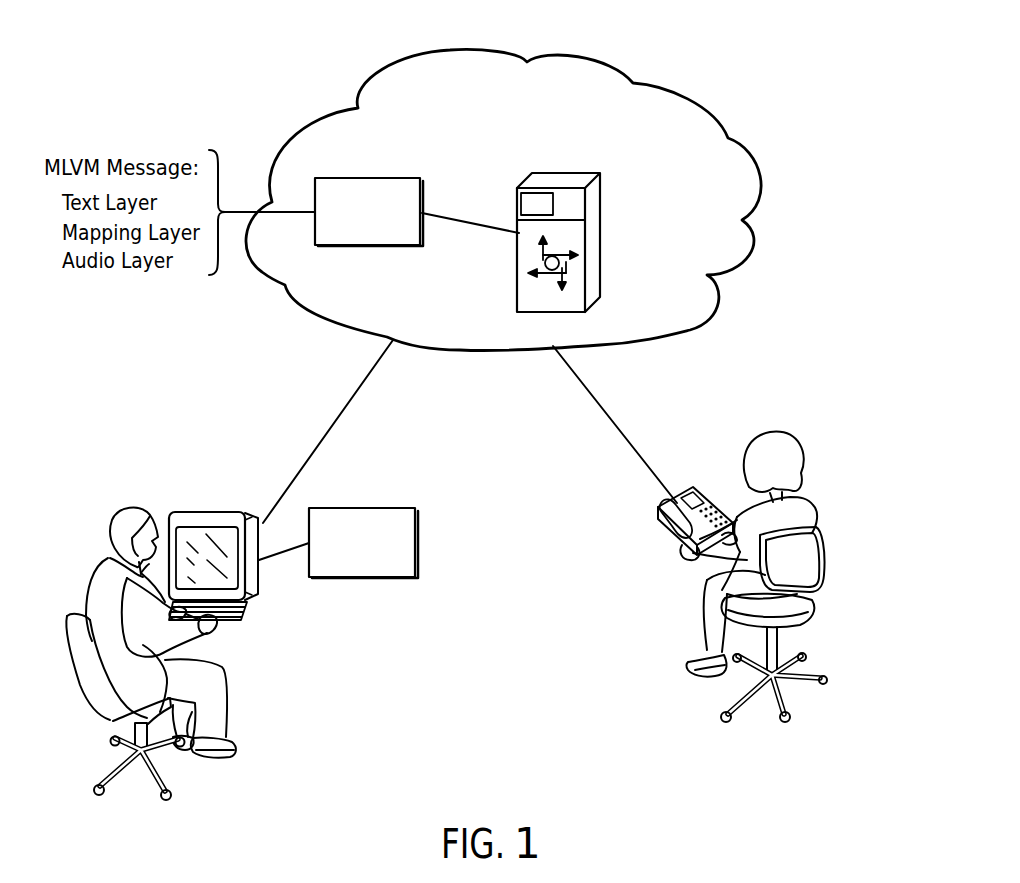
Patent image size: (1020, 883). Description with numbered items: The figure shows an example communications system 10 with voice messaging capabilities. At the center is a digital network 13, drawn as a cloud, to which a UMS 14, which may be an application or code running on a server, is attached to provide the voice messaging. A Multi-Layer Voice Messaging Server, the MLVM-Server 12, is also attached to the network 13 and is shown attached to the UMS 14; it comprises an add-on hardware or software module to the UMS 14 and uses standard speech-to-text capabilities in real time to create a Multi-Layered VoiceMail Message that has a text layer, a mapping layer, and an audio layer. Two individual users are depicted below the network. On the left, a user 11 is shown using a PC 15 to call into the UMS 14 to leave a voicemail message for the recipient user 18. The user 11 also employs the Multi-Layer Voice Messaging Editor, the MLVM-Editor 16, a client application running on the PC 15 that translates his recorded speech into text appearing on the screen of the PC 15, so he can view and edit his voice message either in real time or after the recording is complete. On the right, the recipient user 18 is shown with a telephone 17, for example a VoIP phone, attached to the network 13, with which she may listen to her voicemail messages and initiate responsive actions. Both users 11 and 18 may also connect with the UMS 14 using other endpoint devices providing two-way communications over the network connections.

The communications system 10 is at (174, 43).
The user 11 is at (97, 561).
The Multi-Layer Voice Messaging Server (MLVM-Server) 12 is at (363, 247).
The digital network 13 is at (516, 152).
The UMS 14 is at (603, 210).
The PC 15 is at (203, 511).
The Multi-Layer Voice Messaging Editor (MLVM-Editor) 16 is at (360, 578).
The telephone 17 is at (660, 505).
The user (recipient) 18 is at (810, 501).